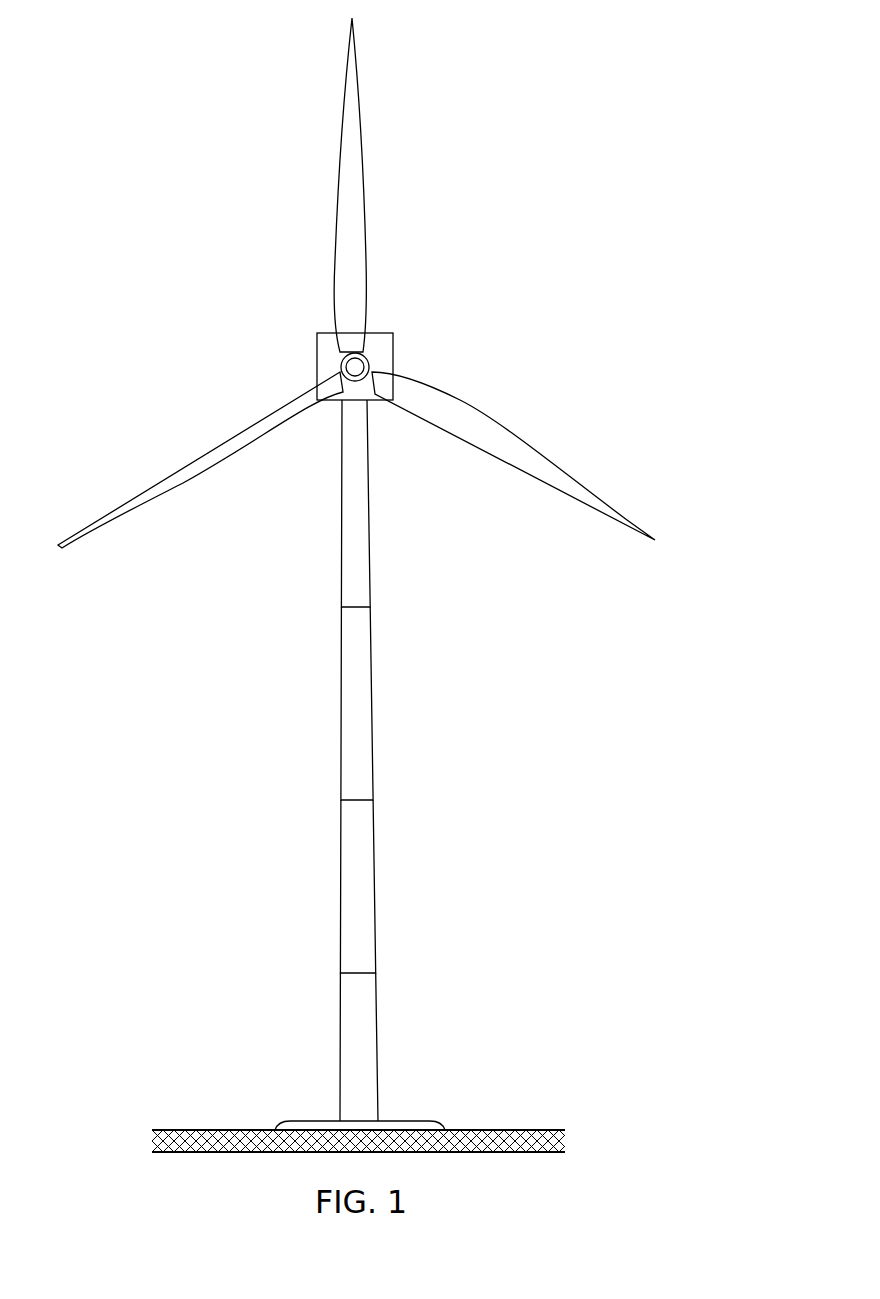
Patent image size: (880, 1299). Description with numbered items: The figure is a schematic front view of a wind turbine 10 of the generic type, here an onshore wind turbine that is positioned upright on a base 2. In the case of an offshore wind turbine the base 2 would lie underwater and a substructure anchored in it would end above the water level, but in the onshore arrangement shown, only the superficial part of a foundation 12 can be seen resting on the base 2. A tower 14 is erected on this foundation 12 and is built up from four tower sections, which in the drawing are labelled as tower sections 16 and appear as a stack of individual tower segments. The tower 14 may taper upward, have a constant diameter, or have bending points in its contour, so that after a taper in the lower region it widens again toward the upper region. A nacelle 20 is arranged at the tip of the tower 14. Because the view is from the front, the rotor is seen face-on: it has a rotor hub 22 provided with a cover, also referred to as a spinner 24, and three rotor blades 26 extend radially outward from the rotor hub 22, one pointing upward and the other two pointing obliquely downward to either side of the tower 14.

The base 2 is at (510, 1129).
The wind turbine 10 is at (577, 183).
The foundation 12 is at (408, 1122).
The tower 14 is at (396, 760).
The tower segment 16 is at (355, 508).
The nacelle 20 is at (380, 335).
The rotor hub 22 is at (377, 363).
The spinner 24 is at (338, 360).
The rotor blades 26 is at (350, 240).